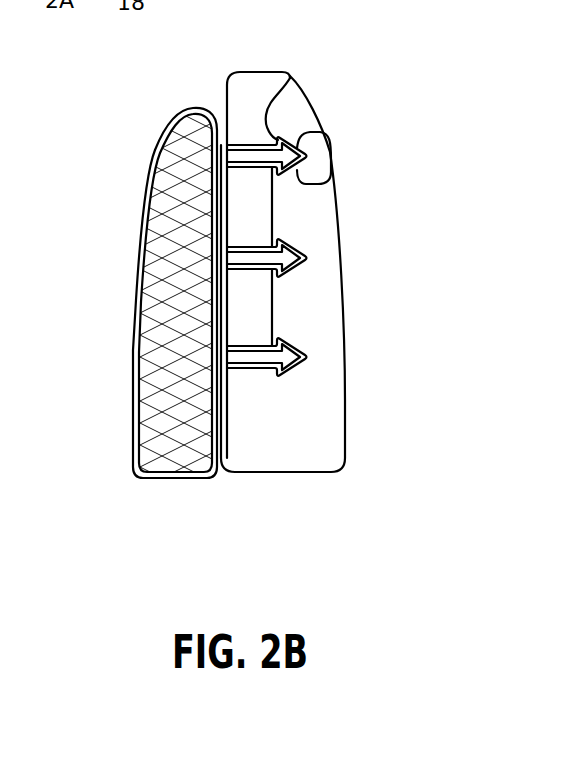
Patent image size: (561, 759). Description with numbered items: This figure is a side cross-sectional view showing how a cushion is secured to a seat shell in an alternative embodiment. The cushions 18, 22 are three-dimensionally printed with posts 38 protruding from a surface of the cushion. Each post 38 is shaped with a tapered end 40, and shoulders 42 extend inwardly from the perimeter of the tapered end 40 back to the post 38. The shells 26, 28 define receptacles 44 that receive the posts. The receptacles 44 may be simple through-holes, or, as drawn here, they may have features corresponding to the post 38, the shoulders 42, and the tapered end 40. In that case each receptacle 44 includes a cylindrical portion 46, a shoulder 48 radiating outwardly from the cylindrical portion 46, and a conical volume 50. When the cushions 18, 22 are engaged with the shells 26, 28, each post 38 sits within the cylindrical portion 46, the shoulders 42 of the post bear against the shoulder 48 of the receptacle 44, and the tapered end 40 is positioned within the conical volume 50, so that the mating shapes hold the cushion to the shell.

The cushion 18 is at (131, 291).
The cushion 22 is at (156, 311).
The shell 26 is at (371, 267).
The shell 28 is at (332, 246).
The post 38 is at (227, 153).
The tapered end 40 is at (322, 132).
The shoulder 42 is at (289, 75).
The receptacle 44 is at (296, 105).
The cylindrical portion 46 is at (241, 138).
The shoulder 48 is at (272, 178).
The conical volume 50 is at (297, 174).